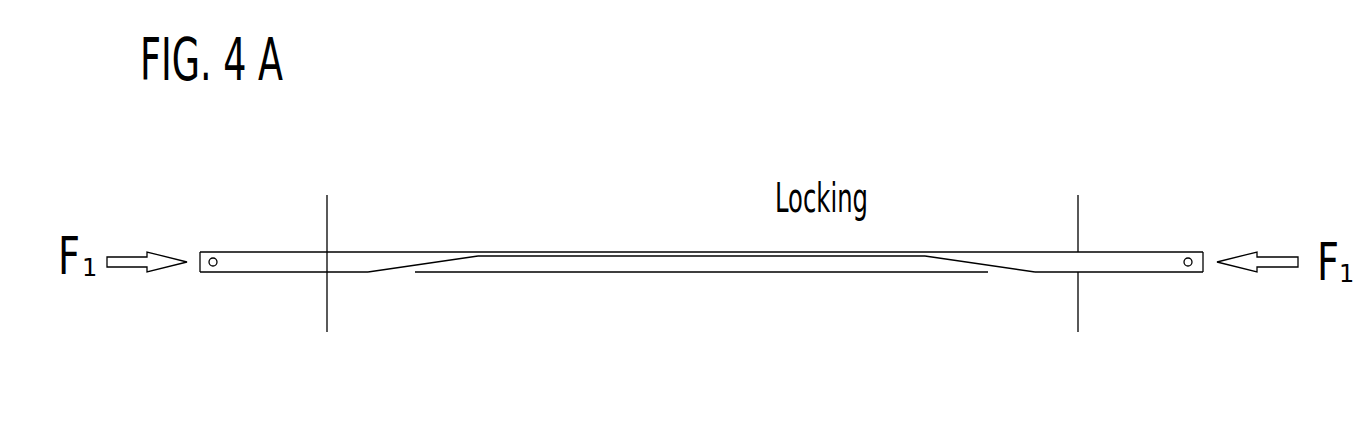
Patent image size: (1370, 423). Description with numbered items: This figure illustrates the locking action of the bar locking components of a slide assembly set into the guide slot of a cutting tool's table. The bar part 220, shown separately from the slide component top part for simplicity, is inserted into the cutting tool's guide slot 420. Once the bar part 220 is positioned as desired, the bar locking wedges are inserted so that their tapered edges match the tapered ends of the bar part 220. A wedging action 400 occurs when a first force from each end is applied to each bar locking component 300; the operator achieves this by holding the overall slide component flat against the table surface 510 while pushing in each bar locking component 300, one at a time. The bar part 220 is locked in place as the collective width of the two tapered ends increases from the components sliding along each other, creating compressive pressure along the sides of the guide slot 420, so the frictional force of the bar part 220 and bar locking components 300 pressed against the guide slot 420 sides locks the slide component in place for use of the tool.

The bar part 220 is at (688, 273).
The bar locking component 300 is at (273, 252).
The wedging action 400 is at (433, 258).
The guide slot 420 is at (638, 253).
The table surface 510 is at (1078, 182).